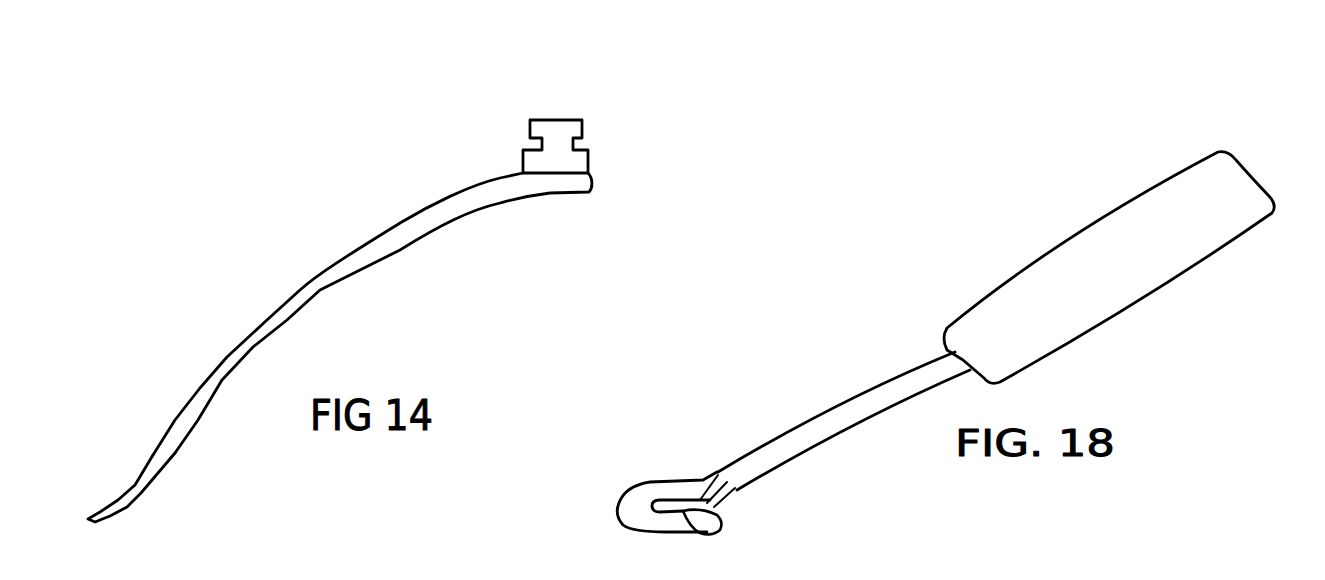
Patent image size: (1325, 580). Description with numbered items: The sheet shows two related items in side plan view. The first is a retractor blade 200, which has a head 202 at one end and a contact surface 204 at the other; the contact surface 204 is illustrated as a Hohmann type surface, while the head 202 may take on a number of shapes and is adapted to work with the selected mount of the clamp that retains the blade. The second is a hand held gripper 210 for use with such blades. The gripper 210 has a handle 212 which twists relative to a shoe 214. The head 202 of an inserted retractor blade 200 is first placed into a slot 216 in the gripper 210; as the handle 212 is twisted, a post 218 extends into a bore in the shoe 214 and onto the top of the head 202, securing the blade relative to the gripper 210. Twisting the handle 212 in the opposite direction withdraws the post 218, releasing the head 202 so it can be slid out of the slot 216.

In FIG. 14, the retractor blade 200 is at (353, 145).
In FIG. 14, the head 202 is at (584, 162).
In FIG. 14, the contact surface 204 is at (145, 488).
In FIG. 18, the hand held gripper 210 is at (1073, 206).
In FIG. 18, the handle 212 is at (1147, 279).
In FIG. 18, the shoe 214 is at (662, 486).
In FIG. 18, the slot 216 is at (700, 533).
In FIG. 18, the post 218 is at (708, 482).